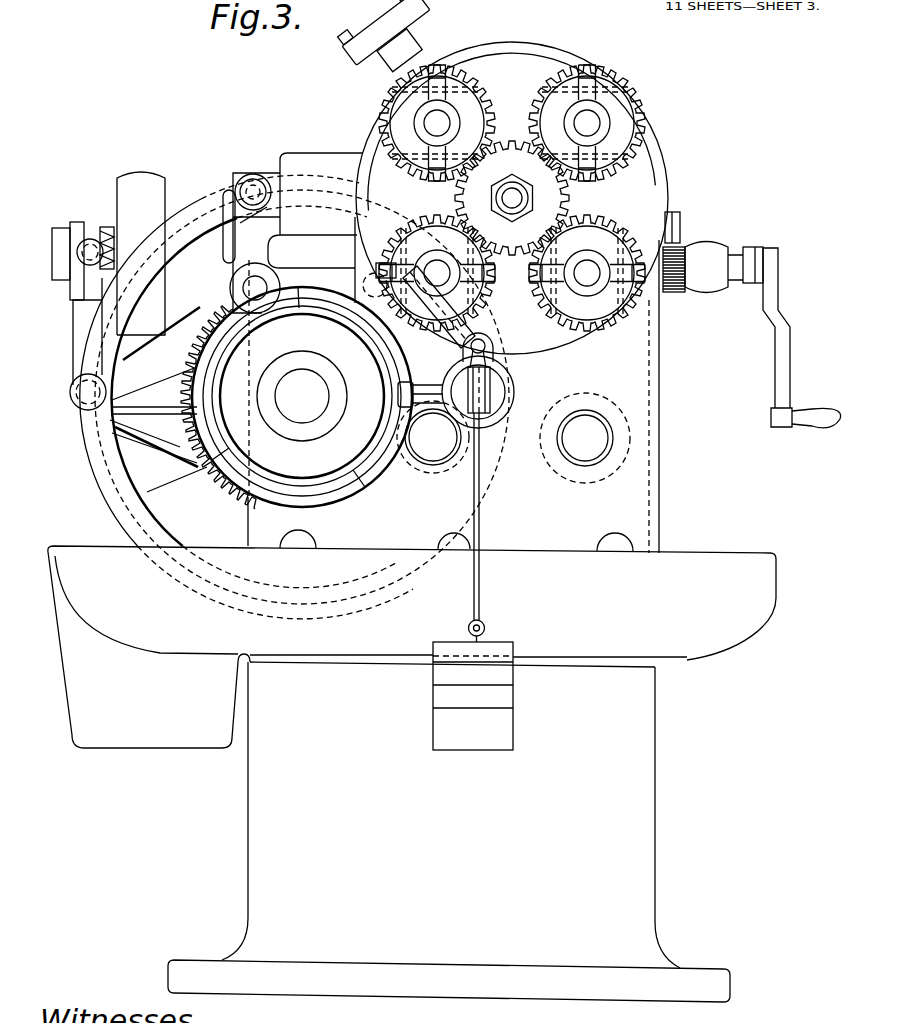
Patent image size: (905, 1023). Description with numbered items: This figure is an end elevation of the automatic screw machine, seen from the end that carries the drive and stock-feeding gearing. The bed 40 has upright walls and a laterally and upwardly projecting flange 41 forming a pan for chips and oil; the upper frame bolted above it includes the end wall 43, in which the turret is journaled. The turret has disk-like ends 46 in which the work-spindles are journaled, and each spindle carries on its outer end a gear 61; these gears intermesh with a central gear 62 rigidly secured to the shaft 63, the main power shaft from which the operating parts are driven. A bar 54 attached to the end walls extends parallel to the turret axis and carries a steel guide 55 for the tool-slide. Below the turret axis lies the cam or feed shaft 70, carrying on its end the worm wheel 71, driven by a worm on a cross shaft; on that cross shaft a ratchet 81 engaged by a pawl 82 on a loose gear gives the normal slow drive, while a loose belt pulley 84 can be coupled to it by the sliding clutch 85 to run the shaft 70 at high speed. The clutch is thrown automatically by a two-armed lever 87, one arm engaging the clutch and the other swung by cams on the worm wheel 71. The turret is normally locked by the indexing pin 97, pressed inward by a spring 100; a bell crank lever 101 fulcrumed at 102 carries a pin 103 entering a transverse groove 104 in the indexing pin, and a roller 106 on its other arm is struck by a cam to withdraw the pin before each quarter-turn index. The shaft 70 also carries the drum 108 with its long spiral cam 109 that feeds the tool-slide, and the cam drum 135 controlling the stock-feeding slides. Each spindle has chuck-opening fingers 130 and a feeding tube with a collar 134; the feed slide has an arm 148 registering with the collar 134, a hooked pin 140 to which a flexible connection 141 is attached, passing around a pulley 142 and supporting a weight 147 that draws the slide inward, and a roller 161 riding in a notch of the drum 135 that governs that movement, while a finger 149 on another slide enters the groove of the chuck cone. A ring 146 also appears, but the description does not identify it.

The bed 40 is at (642, 775).
The flange 41 is at (745, 604).
The wall 43 is at (627, 507).
The disk-like end 46 is at (536, 66).
The bar 54 is at (395, 42).
The guide 55 is at (413, 50).
The gear 61 is at (481, 92).
The gear 62 is at (549, 208).
The shaft 63 is at (514, 208).
The cam or feed shaft 70 is at (302, 396).
The worm wheel 71 is at (222, 487).
The ratchet 81 is at (680, 240).
The pawl 82 is at (674, 219).
The belt pulley 84 is at (142, 178).
The clutch 85 is at (89, 240).
The two-armed lever 87 is at (152, 425).
The indexing pin 97 is at (270, 180).
The spring 100 is at (228, 192).
The bell crank lever 101 is at (245, 238).
The fulcrum 102 is at (252, 288).
The pin 103 is at (253, 179).
The transverse groove 104 is at (248, 178).
The roller 106 is at (424, 304).
The drum 108 is at (107, 462).
The spiral cam 109 is at (85, 423).
The fingers 130 is at (443, 62).
The collar 134 is at (418, 115).
The cam drum 135 is at (308, 486).
The hooked pin 140 is at (492, 346).
The flexible connection 141 is at (480, 521).
The pulley 142 is at (484, 416).
The ring 146 is at (497, 396).
The weight 147 is at (496, 696).
The arm 148 is at (380, 298).
The arm or finger 149 is at (432, 404).
The roller 161 is at (393, 462).